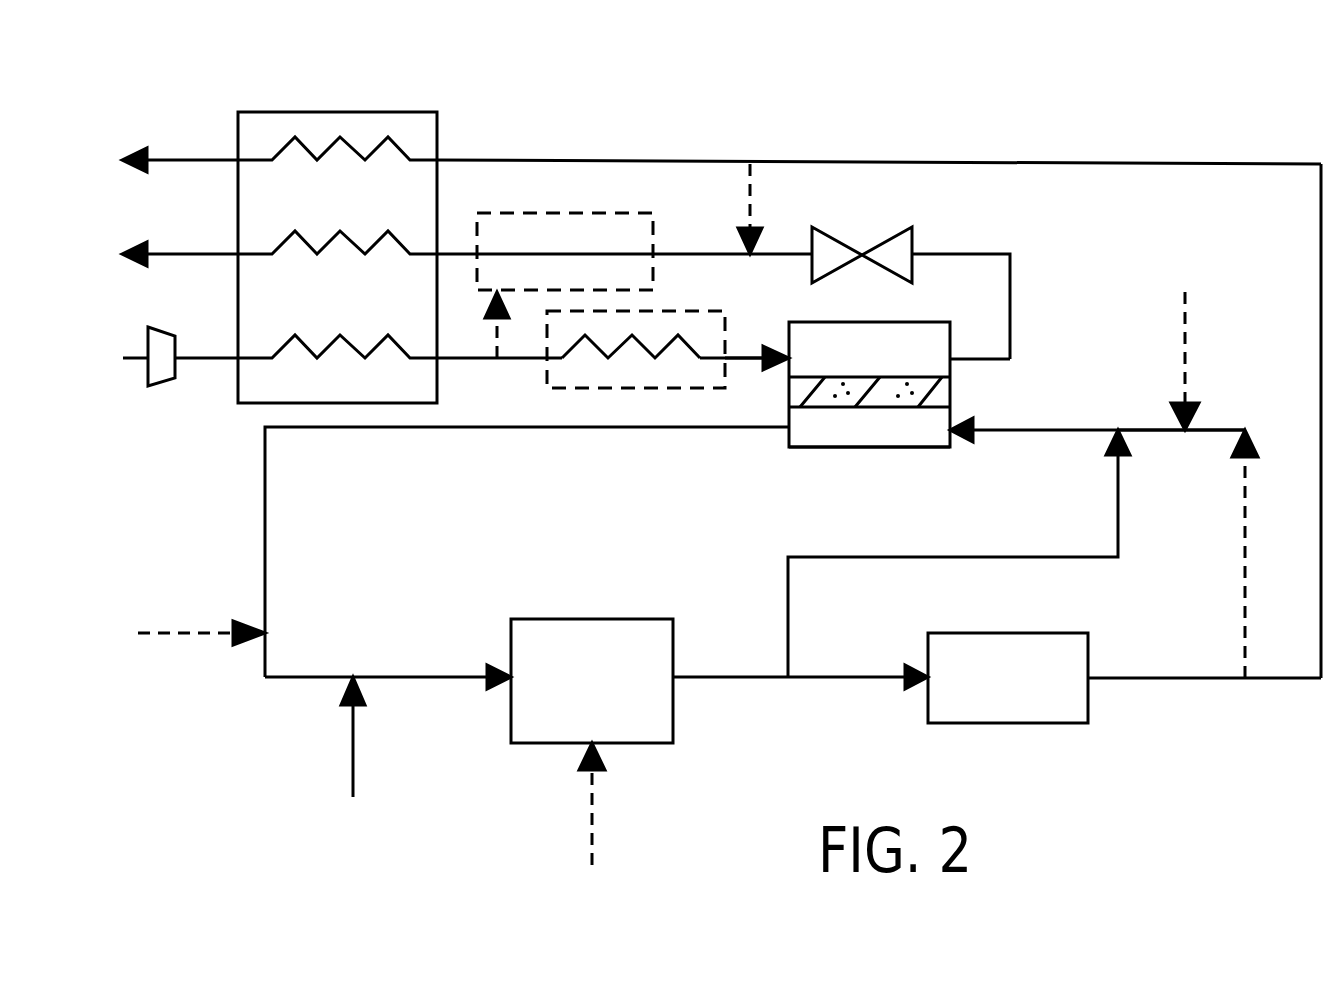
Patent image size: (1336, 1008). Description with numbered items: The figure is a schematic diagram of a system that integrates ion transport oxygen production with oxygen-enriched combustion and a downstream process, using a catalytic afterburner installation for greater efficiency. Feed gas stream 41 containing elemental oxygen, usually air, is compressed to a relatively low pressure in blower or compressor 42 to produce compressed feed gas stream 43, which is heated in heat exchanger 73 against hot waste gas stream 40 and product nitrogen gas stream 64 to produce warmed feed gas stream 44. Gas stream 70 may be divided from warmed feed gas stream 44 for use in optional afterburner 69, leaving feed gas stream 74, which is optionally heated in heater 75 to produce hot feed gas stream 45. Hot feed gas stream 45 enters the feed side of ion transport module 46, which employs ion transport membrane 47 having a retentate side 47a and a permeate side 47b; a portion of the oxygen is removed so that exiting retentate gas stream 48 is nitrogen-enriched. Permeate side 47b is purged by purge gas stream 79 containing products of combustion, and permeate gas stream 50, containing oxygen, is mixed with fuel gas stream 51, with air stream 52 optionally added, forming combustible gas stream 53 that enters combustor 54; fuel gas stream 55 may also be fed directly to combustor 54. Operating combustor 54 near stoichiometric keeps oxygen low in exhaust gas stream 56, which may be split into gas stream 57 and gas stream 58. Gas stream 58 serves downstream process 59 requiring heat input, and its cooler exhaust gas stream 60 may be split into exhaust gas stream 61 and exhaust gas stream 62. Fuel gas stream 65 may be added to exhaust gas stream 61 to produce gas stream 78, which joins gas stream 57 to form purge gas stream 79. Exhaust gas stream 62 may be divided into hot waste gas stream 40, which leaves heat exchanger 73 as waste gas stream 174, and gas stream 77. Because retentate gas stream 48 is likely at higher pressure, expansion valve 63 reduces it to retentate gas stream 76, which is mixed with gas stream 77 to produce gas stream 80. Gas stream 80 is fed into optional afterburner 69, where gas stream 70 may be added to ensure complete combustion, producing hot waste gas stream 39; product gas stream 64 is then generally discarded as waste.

The hot waste gas stream 39 is at (452, 247).
The hot waste gas stream 40 is at (618, 162).
The feed gas stream 41 is at (138, 356).
The blower or compressor 42 is at (163, 332).
The compressed feed gas stream 43 is at (203, 360).
The warmed feed gas stream 44 is at (472, 362).
The hot feed gas stream 45 is at (737, 362).
The ion transport module 46 is at (913, 400).
The ion transport membrane 47 is at (952, 397).
The retentate side 47a is at (912, 372).
The permeate side 47b is at (887, 408).
The retentate gas stream 48 is at (997, 360).
The permeate gas stream 50 is at (265, 570).
The fuel gas stream 51 is at (345, 760).
The air stream 52 is at (173, 633).
The combustible gas stream 53 is at (432, 676).
The combustor 54 is at (608, 619).
The fuel gas stream 55 is at (597, 787).
The exhaust gas stream 56 is at (760, 677).
The gas stream 57 is at (998, 557).
The gas stream 58 is at (855, 677).
The downstream process 59 is at (1027, 633).
The exhaust gas stream 60 is at (1179, 678).
The exhaust gas stream 61 is at (1246, 593).
The exhaust gas stream 62 is at (1320, 203).
The expansion valve 63 is at (912, 265).
The product nitrogen gas stream 64 is at (215, 253).
The fuel gas stream 65 is at (1190, 315).
The afterburner 69 is at (603, 210).
The gas stream 70 is at (495, 330).
The heat exchanger 73 is at (375, 403).
The feed gas stream 74 is at (530, 361).
The heater 75 is at (687, 395).
The retentate gas stream 76 is at (783, 252).
The gas stream 77 is at (751, 207).
The gas stream 78 is at (1205, 432).
The purge gas stream 79 is at (1033, 432).
The gas stream 80 is at (693, 257).
The waste gas stream 174 is at (207, 160).